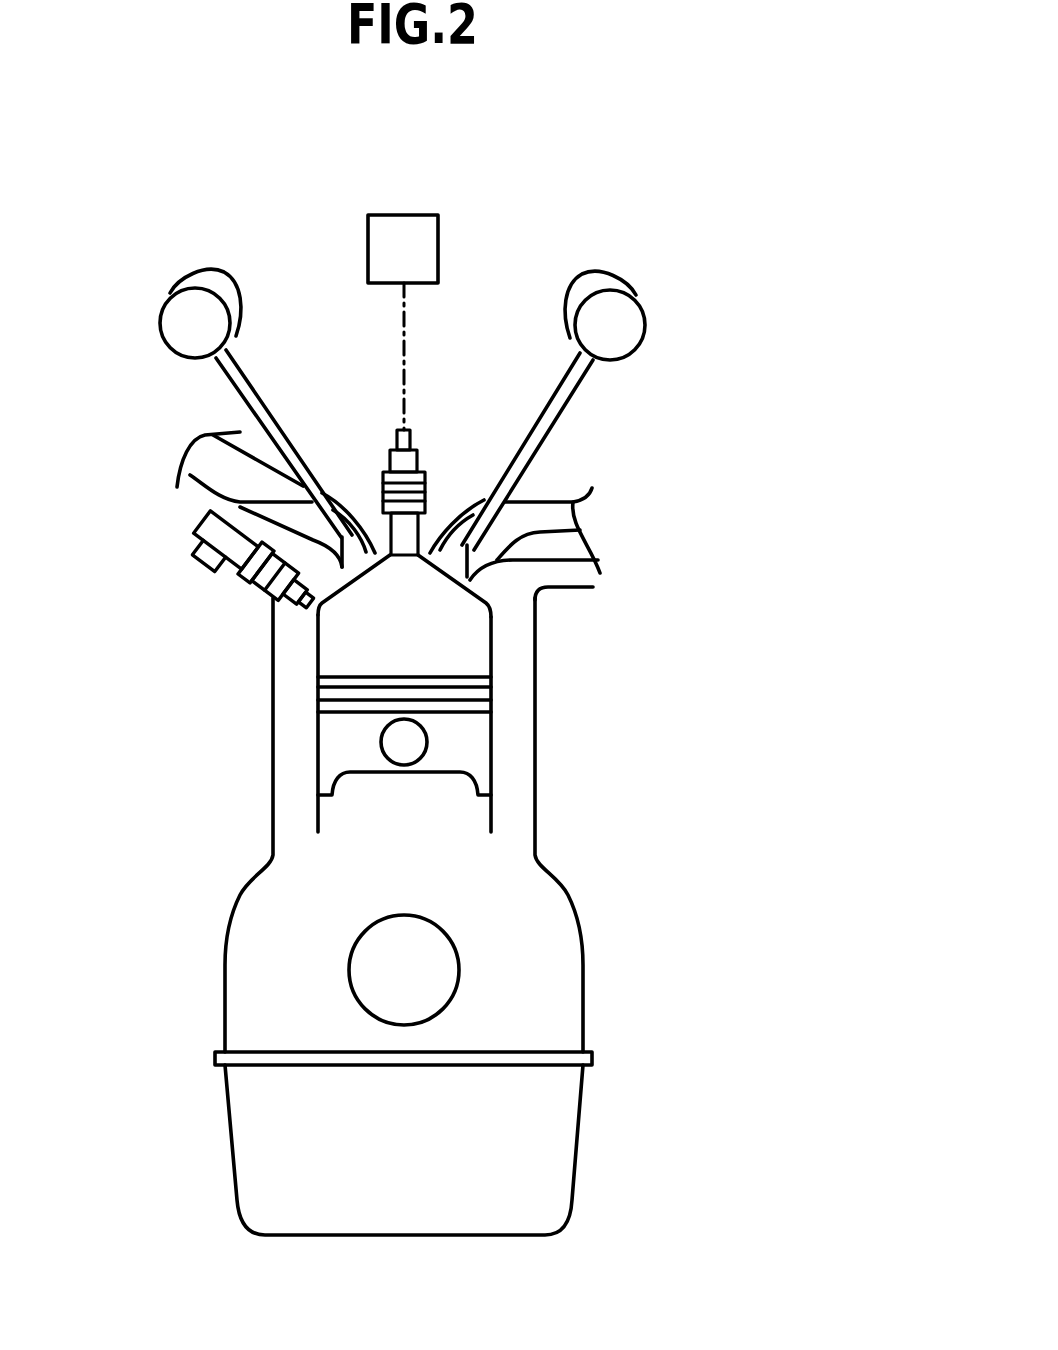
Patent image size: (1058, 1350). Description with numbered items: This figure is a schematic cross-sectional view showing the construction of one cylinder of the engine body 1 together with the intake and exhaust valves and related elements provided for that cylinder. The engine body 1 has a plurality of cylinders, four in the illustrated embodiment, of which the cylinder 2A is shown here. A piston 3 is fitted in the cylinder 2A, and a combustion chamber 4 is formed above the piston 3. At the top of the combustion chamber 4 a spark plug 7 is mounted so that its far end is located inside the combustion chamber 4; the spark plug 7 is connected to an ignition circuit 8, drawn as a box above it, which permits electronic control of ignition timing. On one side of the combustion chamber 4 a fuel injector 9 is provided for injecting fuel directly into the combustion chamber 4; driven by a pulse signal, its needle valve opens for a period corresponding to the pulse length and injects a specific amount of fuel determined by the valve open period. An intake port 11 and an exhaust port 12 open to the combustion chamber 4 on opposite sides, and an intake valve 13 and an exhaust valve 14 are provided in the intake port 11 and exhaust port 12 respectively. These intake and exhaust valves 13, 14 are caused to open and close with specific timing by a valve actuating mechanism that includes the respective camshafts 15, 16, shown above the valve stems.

The engine body 1 is at (238, 780).
The cylinder 2A is at (493, 625).
The piston 3 is at (473, 742).
The combustion chamber 4 is at (463, 653).
The spark plug 7 is at (391, 450).
The ignition circuit 8 is at (408, 213).
The fuel injector 9 is at (263, 594).
The intake port 11 is at (233, 500).
The exhaust port 12 is at (585, 530).
The intake valve 13 is at (197, 463).
The exhaust valve 14 is at (540, 445).
The camshaft 15 is at (167, 298).
The camshaft 16 is at (645, 316).